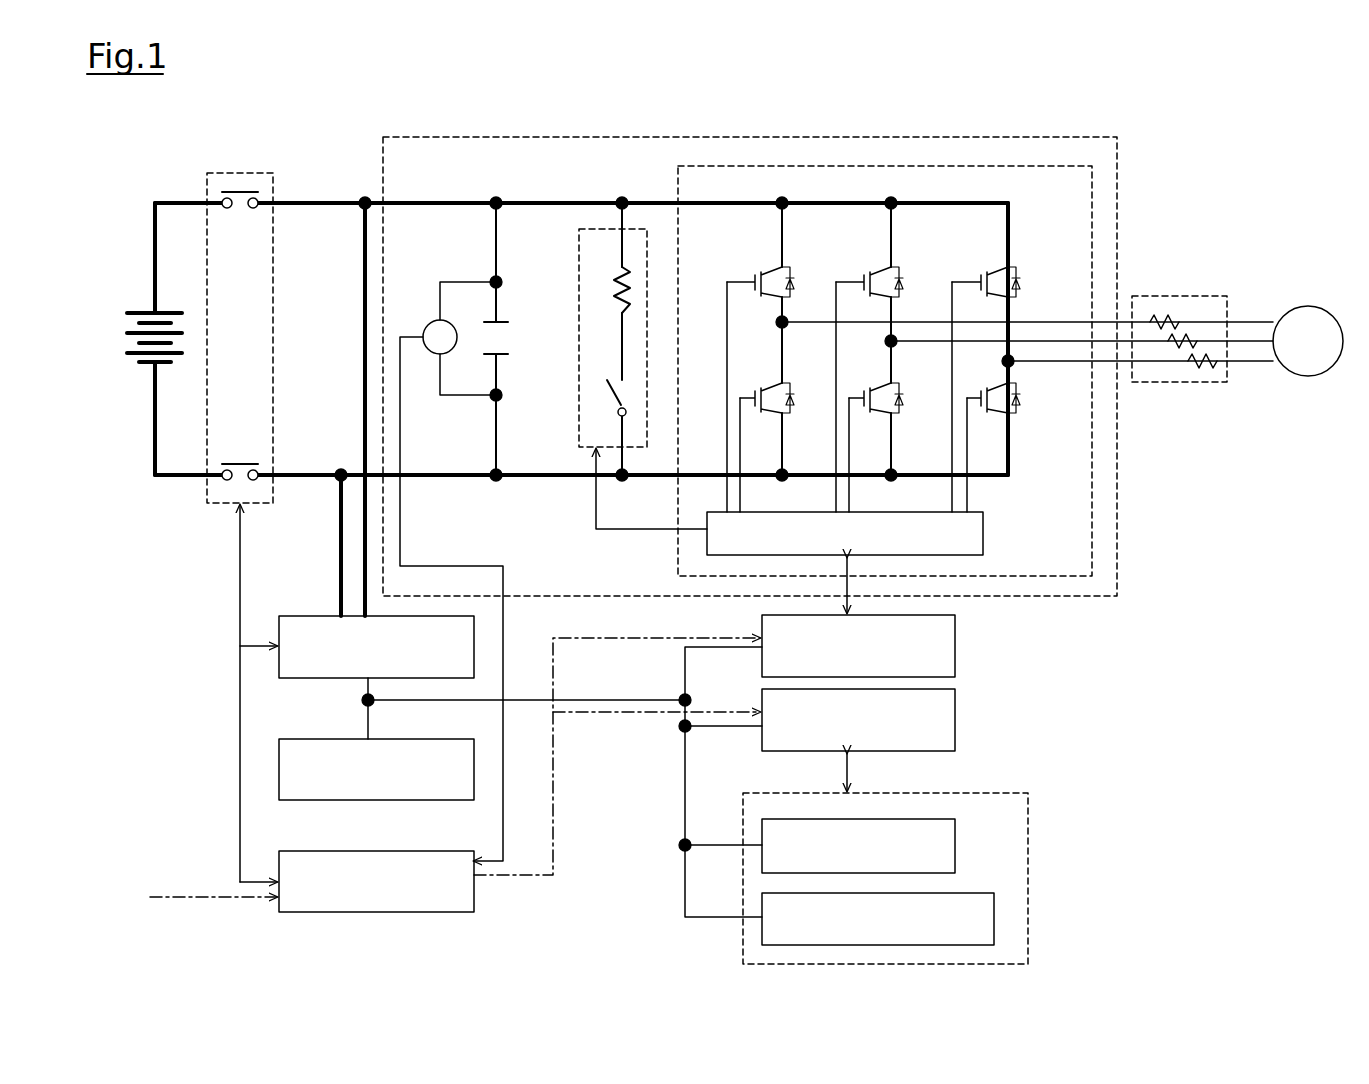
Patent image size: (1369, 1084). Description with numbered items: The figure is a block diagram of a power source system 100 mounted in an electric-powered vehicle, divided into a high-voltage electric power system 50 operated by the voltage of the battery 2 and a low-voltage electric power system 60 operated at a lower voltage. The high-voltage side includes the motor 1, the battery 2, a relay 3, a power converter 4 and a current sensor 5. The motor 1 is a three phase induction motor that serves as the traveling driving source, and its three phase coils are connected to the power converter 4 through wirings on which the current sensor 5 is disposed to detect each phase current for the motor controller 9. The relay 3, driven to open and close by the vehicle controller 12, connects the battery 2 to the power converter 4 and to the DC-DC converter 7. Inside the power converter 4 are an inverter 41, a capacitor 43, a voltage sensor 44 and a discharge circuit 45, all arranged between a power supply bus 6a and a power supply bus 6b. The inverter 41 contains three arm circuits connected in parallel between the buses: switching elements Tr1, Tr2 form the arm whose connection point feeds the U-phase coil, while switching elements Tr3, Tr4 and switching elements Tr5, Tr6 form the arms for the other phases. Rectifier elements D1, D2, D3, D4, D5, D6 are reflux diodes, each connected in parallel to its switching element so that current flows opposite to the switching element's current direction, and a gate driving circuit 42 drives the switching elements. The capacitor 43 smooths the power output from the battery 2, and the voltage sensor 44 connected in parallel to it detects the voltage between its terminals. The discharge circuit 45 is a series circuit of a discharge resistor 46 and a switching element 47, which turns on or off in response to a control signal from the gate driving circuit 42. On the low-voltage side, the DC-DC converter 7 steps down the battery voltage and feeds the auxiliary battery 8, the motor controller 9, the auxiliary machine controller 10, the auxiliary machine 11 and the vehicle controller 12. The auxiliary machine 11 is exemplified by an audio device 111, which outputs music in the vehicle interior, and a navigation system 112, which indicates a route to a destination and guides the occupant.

The power source system 100 is at (1283, 138).
The motor 1 is at (1322, 307).
The battery 2 is at (125, 342).
The relay 3 is at (236, 165).
The power converter 4 is at (998, 135).
The current sensor 5 is at (1215, 294).
The power supply bus 6a is at (318, 202).
The power supply bus 6b is at (322, 472).
The DC-DC converter 7 is at (300, 615).
The auxiliary battery 8 is at (302, 738).
The motor controller 9 is at (957, 645).
The auxiliary machine controller 10 is at (957, 718).
The auxiliary machine 11 is at (990, 792).
The vehicle controller 12 is at (302, 850).
The inverter 41 is at (1097, 207).
The gate driving circuit 42 is at (985, 530).
The capacitor 43 is at (505, 321).
The voltage sensor 44 is at (428, 324).
The discharge circuit 45 is at (600, 228).
The discharge resistor 46 is at (606, 283).
The switching element 47 is at (606, 402).
The high-voltage electric power system 50 is at (1272, 615).
The low-voltage electric power system 60 is at (1272, 746).
The audio device 111 is at (957, 847).
The navigation system 112 is at (996, 920).
The switching element Tr1 is at (762, 272).
The switching element Tr2 is at (762, 388).
The switching element Tr3 is at (871, 272).
The switching element Tr4 is at (871, 388).
The switching element Tr5 is at (988, 272).
The switching element Tr6 is at (988, 388).
The rectifier element D1 is at (792, 274).
The rectifier element D2 is at (794, 390).
The rectifier element D3 is at (901, 274).
The rectifier element D4 is at (903, 390).
The rectifier element D5 is at (1018, 274).
The rectifier element D6 is at (1020, 392).